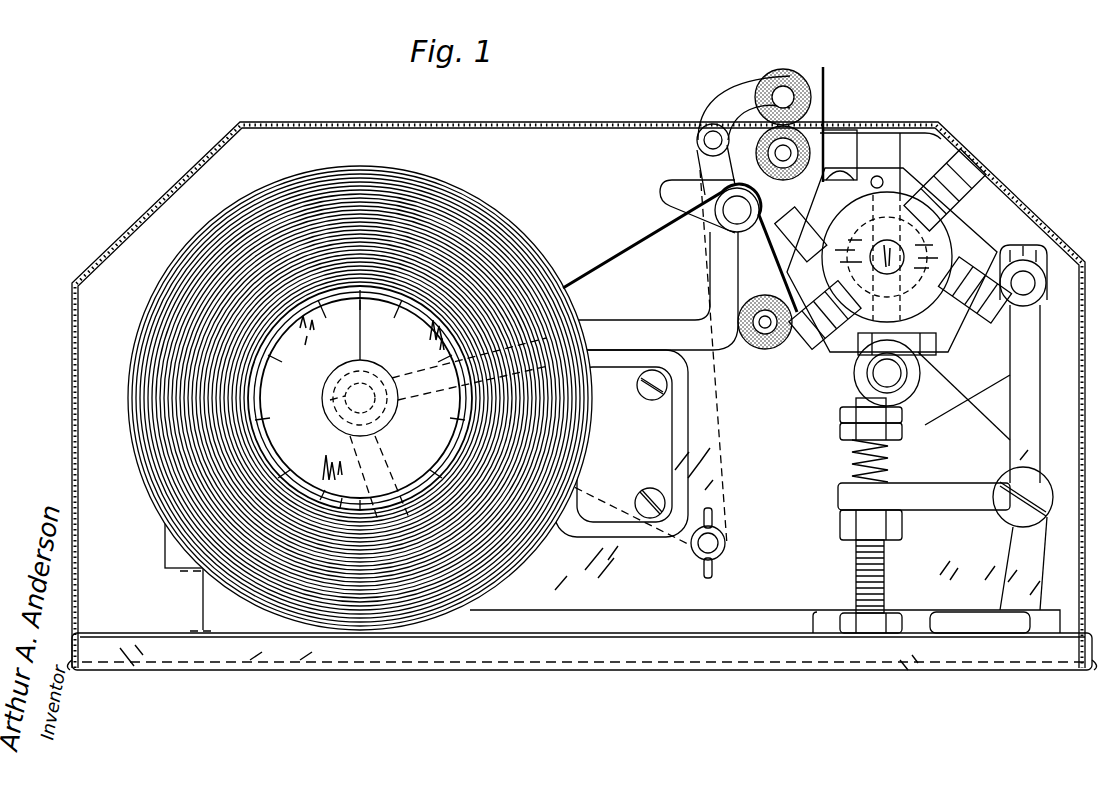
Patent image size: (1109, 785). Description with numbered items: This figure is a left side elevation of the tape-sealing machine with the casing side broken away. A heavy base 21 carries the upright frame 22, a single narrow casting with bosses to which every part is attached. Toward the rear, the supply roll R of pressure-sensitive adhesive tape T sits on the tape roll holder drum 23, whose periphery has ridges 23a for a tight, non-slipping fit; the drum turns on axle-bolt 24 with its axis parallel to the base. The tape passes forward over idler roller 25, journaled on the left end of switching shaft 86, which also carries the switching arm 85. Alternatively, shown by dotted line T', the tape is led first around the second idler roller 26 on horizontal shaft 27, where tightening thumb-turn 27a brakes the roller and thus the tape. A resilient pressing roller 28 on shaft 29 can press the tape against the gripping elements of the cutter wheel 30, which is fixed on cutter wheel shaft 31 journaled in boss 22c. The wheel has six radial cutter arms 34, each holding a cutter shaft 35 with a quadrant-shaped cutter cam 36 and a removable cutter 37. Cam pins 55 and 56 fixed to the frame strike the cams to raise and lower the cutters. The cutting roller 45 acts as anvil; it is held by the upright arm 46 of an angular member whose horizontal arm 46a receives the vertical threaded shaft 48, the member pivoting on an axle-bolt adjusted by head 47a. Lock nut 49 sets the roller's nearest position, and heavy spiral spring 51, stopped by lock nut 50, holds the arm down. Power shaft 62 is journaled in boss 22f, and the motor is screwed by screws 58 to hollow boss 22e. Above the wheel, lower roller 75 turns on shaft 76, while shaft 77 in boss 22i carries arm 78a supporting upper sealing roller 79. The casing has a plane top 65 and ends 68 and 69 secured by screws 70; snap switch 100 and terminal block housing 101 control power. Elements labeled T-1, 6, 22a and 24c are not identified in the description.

The supply roll R is at (150, 298).
The pressure-sensitive adhesive tape T is at (680, 248).
The dotted tape path T' is at (741, 411).
The tape lead T-1 is at (826, 78).
The tape guide 6 is at (820, 122).
The base 21 is at (598, 655).
The upright frame 22 is at (883, 135).
The frame hub 22a is at (325, 404).
The boss 22c is at (928, 294).
The hollow boss 22e is at (621, 443).
The boss 22f is at (852, 368).
The boss 22i is at (690, 152).
The tape roll holder drum 23 is at (360, 398).
The ridges 23a is at (315, 302).
The axle-bolt 24 is at (392, 402).
The reel hub 24c is at (330, 380).
The idler roller 25 is at (730, 214).
The second idler roller 26 is at (722, 538).
The horizontal shaft 27 is at (722, 546).
The thumb-turn 27a is at (703, 570).
The pressing roller 28 is at (758, 308).
The shaft 29 is at (765, 330).
The cutter wheel 30 is at (845, 226).
The cutter wheel shaft 31 is at (887, 274).
The cutter arms 34 is at (912, 236).
The cutter shaft 35 is at (944, 180).
The cutter cam 36 is at (962, 183).
The cutter 37 is at (858, 132).
The cutting roller 45 is at (1047, 262).
The upwardly extending arm 46 is at (1012, 354).
The horizontally extending arm 46a is at (938, 492).
The axle-bolt head 47a is at (1012, 516).
The vertical threaded shaft 48 is at (856, 567).
The lock nut 49 is at (842, 520).
The lock nut 50 is at (848, 414).
The heavy spiral spring 51 is at (855, 455).
The cutter cam pin 55 is at (883, 170).
The cutter cam pin 56 is at (824, 170).
The screws 58 is at (645, 394).
The power shaft 62 is at (880, 376).
The plane surface top 65 is at (412, 122).
The end 68 is at (1076, 566).
The end 69 is at (72, 383).
The screws 70 is at (78, 668).
The lower roller 75 is at (765, 160).
The shaft 76 is at (784, 160).
The shaft 77 is at (697, 140).
The arm 78a is at (745, 112).
The upper sealing roller 79 is at (790, 80).
The switching arm 85 is at (668, 198).
The switching shaft 86 is at (741, 215).
The snap switch 100 is at (165, 548).
The terminal block housing 101 is at (208, 600).